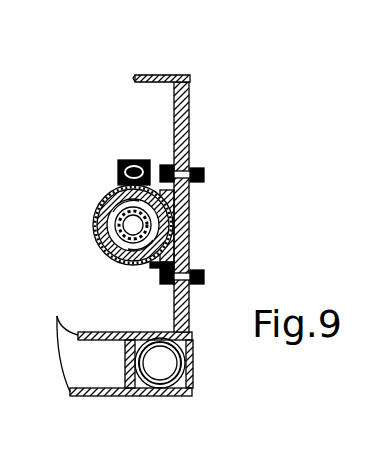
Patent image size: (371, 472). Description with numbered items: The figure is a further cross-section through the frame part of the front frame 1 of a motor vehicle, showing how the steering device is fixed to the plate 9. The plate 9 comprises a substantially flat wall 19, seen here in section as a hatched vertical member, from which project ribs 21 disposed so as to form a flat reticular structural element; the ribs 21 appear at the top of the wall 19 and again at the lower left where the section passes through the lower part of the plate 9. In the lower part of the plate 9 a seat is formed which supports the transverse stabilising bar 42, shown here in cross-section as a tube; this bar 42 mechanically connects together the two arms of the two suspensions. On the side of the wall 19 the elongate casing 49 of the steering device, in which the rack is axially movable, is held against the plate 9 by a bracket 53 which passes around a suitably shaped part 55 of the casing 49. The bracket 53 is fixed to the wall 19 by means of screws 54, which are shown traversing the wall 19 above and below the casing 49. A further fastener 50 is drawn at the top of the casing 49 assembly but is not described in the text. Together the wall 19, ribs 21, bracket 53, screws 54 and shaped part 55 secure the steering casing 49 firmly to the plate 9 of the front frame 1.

The front frame 1 is at (220, 130).
The plate 9 is at (190, 246).
The flat wall 19 is at (186, 131).
The ribs 21 is at (137, 75).
The transverse stabilising bar 42 is at (163, 388).
The casing 49 is at (98, 200).
The bolt 50 is at (115, 191).
The bracket 53 is at (99, 251).
The screws 54 is at (195, 167).
The shaped part 55 is at (176, 203).